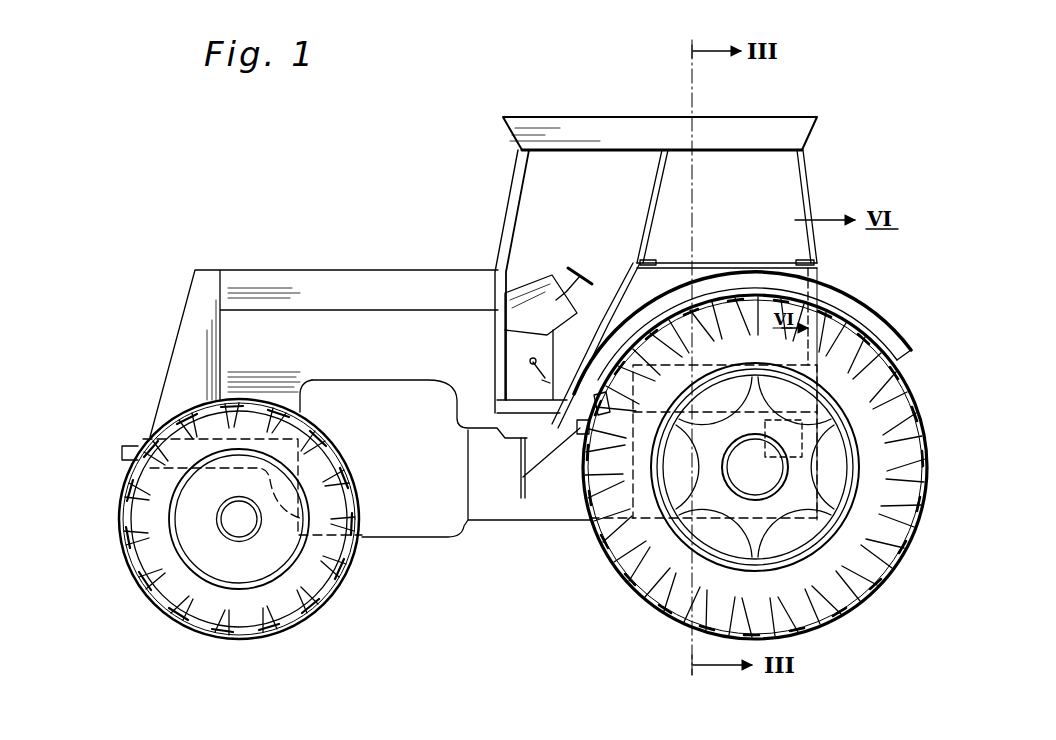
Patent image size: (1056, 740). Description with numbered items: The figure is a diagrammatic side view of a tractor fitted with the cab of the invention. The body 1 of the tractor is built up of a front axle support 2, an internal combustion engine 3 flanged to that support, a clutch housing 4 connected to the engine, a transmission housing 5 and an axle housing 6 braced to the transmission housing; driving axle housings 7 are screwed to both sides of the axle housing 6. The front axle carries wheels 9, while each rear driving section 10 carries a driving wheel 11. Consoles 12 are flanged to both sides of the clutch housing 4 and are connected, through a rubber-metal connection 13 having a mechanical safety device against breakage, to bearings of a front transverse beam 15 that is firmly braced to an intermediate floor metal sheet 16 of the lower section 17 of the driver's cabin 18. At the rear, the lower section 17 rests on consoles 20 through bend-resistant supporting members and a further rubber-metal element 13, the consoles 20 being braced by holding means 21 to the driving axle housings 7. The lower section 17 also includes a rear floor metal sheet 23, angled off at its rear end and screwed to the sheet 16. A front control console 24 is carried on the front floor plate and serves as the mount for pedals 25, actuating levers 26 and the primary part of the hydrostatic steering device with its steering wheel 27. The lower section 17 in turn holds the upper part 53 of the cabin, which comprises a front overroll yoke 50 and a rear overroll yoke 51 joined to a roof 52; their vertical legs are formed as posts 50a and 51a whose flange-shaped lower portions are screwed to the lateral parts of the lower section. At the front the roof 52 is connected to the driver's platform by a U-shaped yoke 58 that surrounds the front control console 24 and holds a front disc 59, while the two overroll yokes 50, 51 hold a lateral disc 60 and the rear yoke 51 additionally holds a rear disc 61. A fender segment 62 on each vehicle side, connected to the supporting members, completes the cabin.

The body 1 is at (532, 532).
The front axle support 2 is at (193, 451).
The internal combustion engine 3 is at (383, 393).
The clutch housing 4 is at (486, 512).
The transmission housing 5 is at (571, 512).
The axle housing 6 is at (658, 513).
The driving axle housing 7 is at (772, 498).
The wheels 9 is at (340, 580).
The rear driving section 10 is at (758, 468).
The driving wheel 11 is at (905, 490).
The console 12 is at (523, 475).
The rubber-metal connection 13 is at (550, 432).
The front transverse beam 15 is at (627, 437).
The intermediate floor metal sheet 16 is at (610, 400).
The lower section 17 is at (884, 298).
The driver's cabin 18 is at (824, 201).
The console 20 is at (812, 440).
The holding means 21 is at (787, 440).
The floor metal sheet 23 is at (672, 367).
The front control console 24 is at (512, 344).
The pedals 25 is at (547, 370).
The actuating levers 26 is at (533, 272).
The steering wheel 27 is at (578, 262).
The front overroll yoke 50 is at (652, 206).
The post 50a is at (658, 255).
The rear overroll yoke 51 is at (796, 173).
The post 51a is at (806, 240).
The roof 52 is at (607, 128).
The upper part 53 is at (575, 106).
The U-shaped yoke 58 is at (508, 230).
The front disc 59 is at (512, 180).
The lateral disc 60 is at (740, 160).
The rear disc 61 is at (802, 156).
The fender segment 62 is at (888, 345).